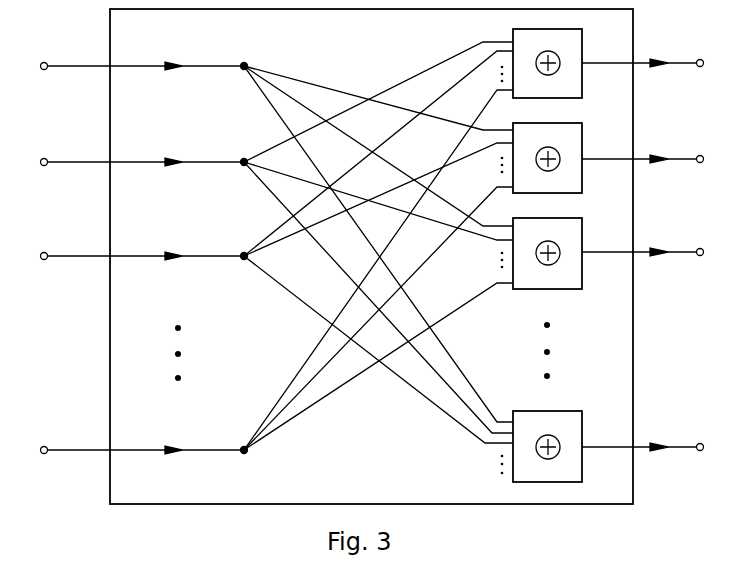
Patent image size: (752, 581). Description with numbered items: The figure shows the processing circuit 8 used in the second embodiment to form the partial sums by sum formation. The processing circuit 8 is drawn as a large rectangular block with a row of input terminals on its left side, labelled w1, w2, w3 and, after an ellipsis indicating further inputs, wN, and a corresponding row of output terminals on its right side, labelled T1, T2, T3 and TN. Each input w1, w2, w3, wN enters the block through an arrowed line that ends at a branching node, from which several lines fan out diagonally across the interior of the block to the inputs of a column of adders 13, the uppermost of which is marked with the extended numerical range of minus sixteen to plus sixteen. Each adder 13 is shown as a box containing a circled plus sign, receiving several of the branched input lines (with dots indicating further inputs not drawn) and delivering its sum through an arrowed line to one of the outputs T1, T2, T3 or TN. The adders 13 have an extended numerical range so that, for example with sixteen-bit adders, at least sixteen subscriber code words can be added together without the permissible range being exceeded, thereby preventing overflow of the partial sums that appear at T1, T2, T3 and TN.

The processing circuit 8 is at (110, 32).
The adder 13 is at (569, 48).
The input terminal w1 is at (68, 66).
The input terminal w2 is at (68, 162).
The input terminal w3 is at (68, 256).
The input terminal wN is at (68, 450).
The output terminal T1 is at (677, 63).
The output terminal T2 is at (677, 159).
The output terminal T3 is at (677, 252).
The output terminal TN is at (677, 447).